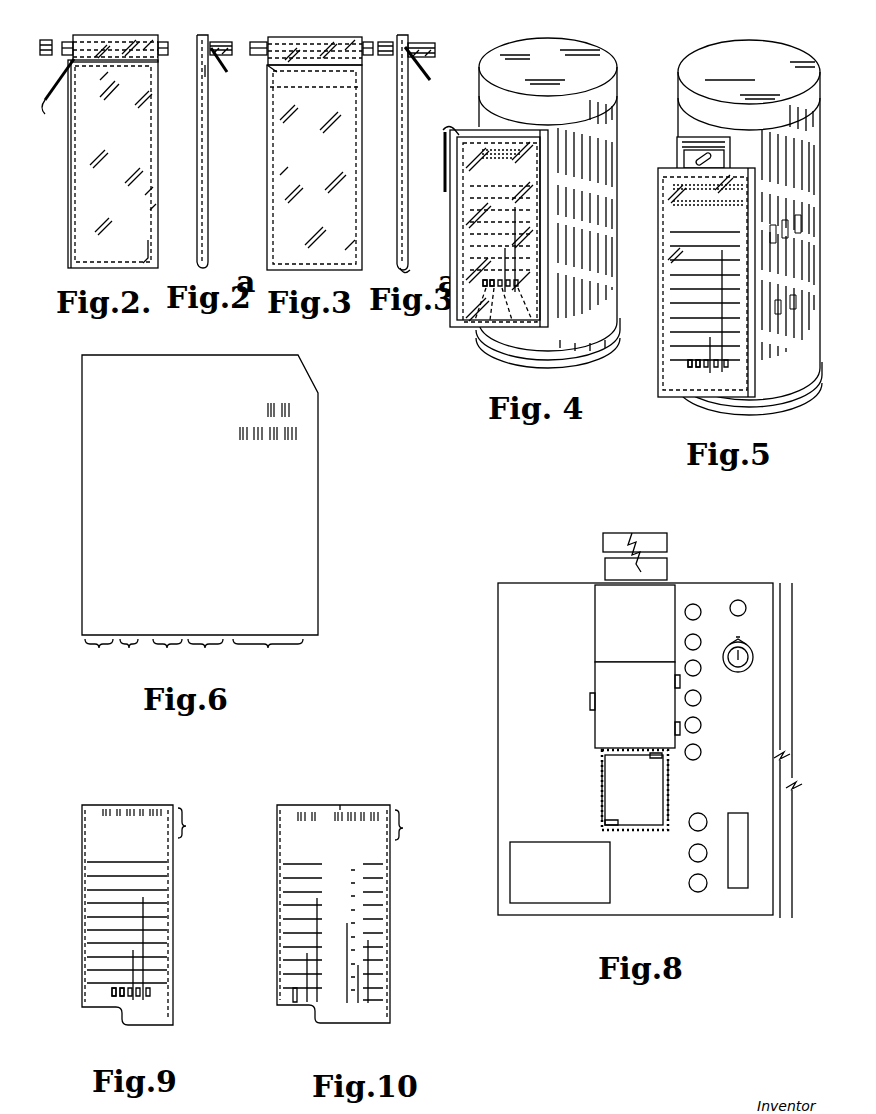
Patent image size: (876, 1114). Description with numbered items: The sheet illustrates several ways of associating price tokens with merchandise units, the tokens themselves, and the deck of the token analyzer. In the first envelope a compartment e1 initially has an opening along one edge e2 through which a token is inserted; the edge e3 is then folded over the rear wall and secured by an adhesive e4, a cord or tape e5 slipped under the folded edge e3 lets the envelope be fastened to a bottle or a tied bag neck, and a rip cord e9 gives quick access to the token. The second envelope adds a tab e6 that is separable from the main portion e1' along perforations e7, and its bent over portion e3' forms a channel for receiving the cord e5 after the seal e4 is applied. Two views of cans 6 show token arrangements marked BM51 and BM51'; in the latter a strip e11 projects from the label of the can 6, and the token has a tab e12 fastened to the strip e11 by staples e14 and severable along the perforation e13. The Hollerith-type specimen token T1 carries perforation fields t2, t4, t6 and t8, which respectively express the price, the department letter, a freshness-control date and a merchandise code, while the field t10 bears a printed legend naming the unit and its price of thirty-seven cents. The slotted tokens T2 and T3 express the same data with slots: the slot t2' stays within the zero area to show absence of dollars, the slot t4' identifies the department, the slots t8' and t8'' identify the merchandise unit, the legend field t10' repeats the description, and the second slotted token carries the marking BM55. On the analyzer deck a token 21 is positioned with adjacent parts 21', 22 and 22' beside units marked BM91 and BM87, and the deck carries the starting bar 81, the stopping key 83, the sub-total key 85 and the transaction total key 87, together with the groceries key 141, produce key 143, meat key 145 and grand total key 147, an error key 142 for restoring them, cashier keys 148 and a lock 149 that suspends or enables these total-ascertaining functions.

In FIG. 2A, the compartment e1 is at (187, 151).
In FIG. 3, the main portion of envelope e1' is at (294, 167).
In FIG. 2, the opening e2 is at (114, 38).
In FIG. 2A, the folded over edge e3 is at (234, 63).
In FIG. 3A, the bent over portion e3' is at (437, 63).
In FIG. 2A, the adhesive e4 is at (206, 70).
In FIG. 3A, the adhesive e4 is at (410, 80).
In FIG. 2A, the cord or tape e5 is at (206, 36).
In FIG. 3A, the cord or tape e5 is at (408, 36).
In FIG. 3, the tab e6 is at (345, 82).
In FIG. 3, the perforations e7 is at (283, 97).
In FIG. 2, the rip cord e9 is at (73, 165).
In FIG. 3A, the rip cord e9 is at (405, 263).
In FIG. 4, the rip cord e9 is at (445, 176).
In FIG. 5, the strip e11 is at (680, 138).
In FIG. 5, the tab e12 is at (684, 152).
In FIG. 5, the perforation e13 is at (682, 165).
In FIG. 5, the staples e14 is at (702, 155).
In FIG. 4, the cans 6 is at (548, 81).
In FIG. 5, the cans 6 is at (749, 85).
In FIG. 4, the bin marker door BM51 is at (478, 234).
In FIG. 5, the bin marker panel BM51' is at (684, 282).
In FIG. 10, the bin marker tag BM55 is at (330, 805).
In FIG. 8, the bin marker module BM91 is at (635, 623).
In FIG. 8, the bin marker module BM87 is at (635, 705).
In FIG. 4, the price expressing slot t2' is at (466, 316).
In FIG. 5, the price expressing slot t2' is at (664, 384).
In FIG. 9, the price expressing slot t2' is at (86, 1011).
In FIG. 10, the department slot t4' is at (336, 984).
In FIG. 10, the merchandise identifying slot t8' is at (369, 1005).
In FIG. 10, the merchandise identifying slot t8'' is at (392, 992).
In FIG. 6, the price field t2 is at (99, 652).
In FIG. 6, the departmental field t4 is at (129, 652).
In FIG. 6, the freshness control field t6 is at (167, 652).
In FIG. 6, the merchandise code field t8 is at (205, 652).
In FIG. 6, the legend field t10 is at (268, 652).
In FIG. 9, the legend field t10' is at (195, 823).
In FIG. 10, the legend field t10' is at (413, 825).
In FIG. 6, the specimen token T1 is at (333, 517).
In FIG. 9, the tag card T2 is at (183, 914).
In FIG. 10, the tag card T3 is at (400, 927).
In FIG. 8, the token 21 is at (635, 790).
In FIG. 8, the card holder side 21' is at (635, 790).
In FIG. 8, the card stop 22 is at (593, 825).
In FIG. 8, the card stop 22' is at (638, 764).
In FIG. 8, the starting bar 81 is at (745, 814).
In FIG. 8, the stopping key 83 is at (695, 813).
In FIG. 8, the sub-total key 85 is at (688, 853).
In FIG. 8, the transaction total key 87 is at (688, 882).
In FIG. 8, the groceries totalizer key 141 is at (701, 752).
In FIG. 8, the error key 142 is at (743, 600).
In FIG. 8, the produce totalizer key 143 is at (701, 727).
In FIG. 8, the meat totalizer key 145 is at (701, 700).
In FIG. 8, the grand totalizer key 147 is at (728, 678).
In FIG. 8, the cashier keys 148 is at (699, 618).
In FIG. 8, the lock 149 is at (750, 663).